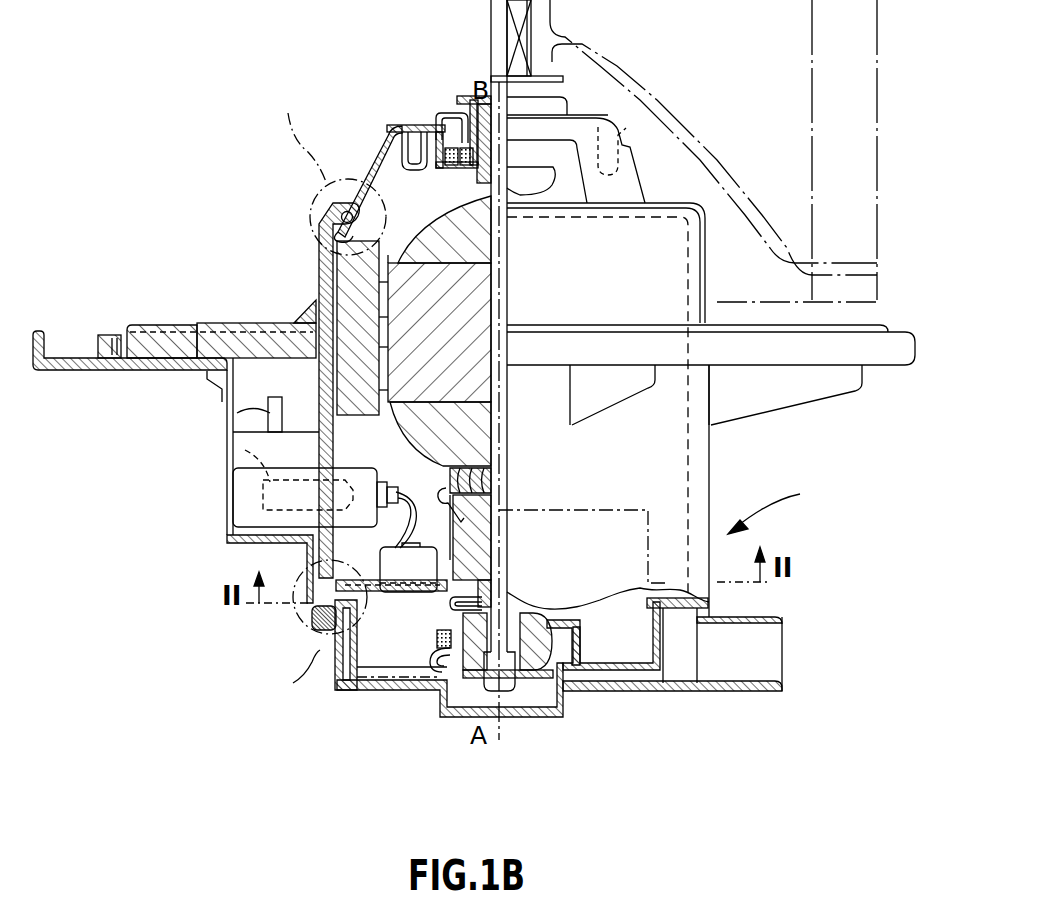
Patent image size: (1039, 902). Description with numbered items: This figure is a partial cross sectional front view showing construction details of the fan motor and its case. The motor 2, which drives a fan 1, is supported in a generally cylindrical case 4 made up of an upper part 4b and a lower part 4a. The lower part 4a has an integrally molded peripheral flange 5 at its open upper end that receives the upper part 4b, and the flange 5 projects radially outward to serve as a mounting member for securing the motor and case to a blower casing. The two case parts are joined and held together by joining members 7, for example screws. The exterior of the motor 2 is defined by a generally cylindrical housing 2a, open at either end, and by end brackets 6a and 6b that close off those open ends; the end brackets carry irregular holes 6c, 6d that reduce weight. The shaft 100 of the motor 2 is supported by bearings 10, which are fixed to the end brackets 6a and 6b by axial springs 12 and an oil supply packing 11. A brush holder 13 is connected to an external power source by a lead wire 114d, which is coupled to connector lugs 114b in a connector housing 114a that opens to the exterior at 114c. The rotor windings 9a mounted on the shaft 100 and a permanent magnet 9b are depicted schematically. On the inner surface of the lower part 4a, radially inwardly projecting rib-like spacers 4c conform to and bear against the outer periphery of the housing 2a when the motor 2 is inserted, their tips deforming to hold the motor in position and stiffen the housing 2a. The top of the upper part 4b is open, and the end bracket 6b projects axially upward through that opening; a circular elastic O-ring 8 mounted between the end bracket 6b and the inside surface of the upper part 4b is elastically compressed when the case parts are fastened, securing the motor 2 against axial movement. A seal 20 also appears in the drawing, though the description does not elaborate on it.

The fan 1 is at (878, 33).
The motor 2 is at (668, 462).
The cylindrical housing 2a is at (332, 268).
The case 4 is at (510, 446).
The lower part of case 4a is at (230, 514).
The upper part of case 4b is at (308, 308).
The spacers 4c is at (334, 580).
The peripheral flange 5 is at (100, 370).
The end bracket 6a is at (350, 678).
The end bracket 6b is at (392, 126).
The irregular holes 6c is at (392, 682).
The irregular holes 6d is at (371, 172).
The joining members 7 is at (646, 326).
The O-ring 8 is at (348, 212).
The rotor windings 9a is at (396, 268).
The permanent magnet 9b is at (345, 379).
The bearings 10 is at (482, 104).
The oil supply packing 11 is at (462, 148).
The axial springs 12 is at (447, 150).
The brush holder 13 is at (481, 584).
The seal 20 is at (316, 630).
The shaft 100 is at (500, 421).
The connector housing 114a is at (255, 486).
The connector lugs 114b is at (235, 448).
The exterior opening of connector housing 114c is at (240, 540).
The lead wire 114d is at (395, 546).